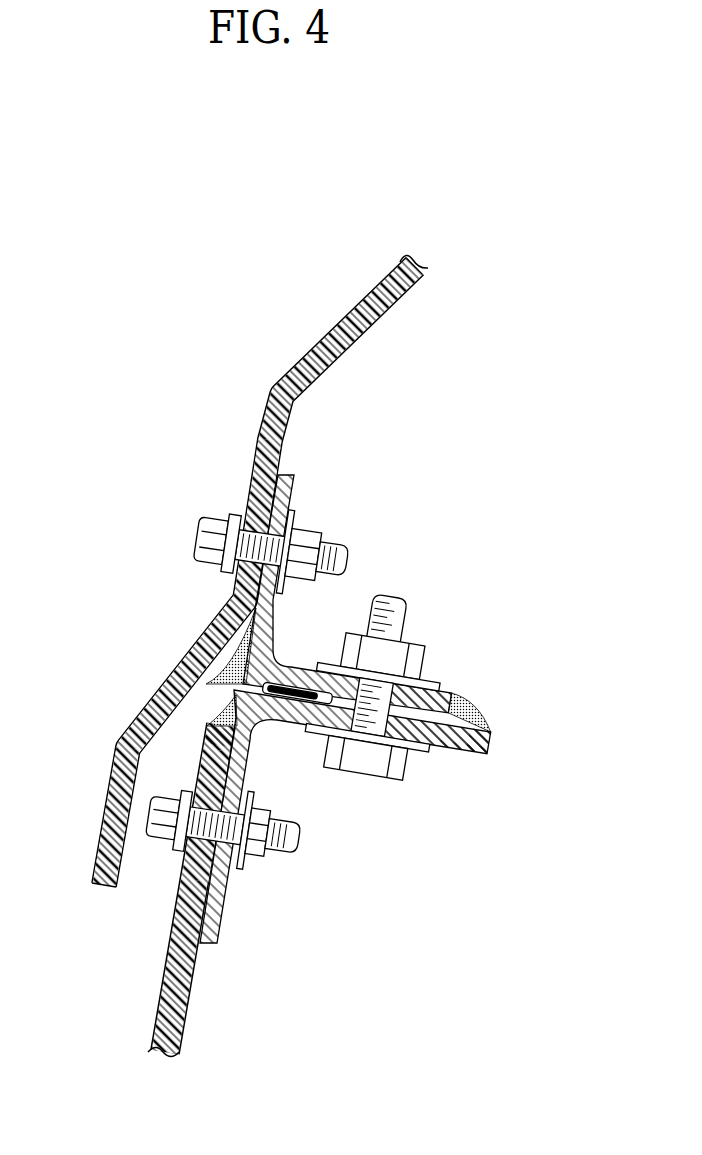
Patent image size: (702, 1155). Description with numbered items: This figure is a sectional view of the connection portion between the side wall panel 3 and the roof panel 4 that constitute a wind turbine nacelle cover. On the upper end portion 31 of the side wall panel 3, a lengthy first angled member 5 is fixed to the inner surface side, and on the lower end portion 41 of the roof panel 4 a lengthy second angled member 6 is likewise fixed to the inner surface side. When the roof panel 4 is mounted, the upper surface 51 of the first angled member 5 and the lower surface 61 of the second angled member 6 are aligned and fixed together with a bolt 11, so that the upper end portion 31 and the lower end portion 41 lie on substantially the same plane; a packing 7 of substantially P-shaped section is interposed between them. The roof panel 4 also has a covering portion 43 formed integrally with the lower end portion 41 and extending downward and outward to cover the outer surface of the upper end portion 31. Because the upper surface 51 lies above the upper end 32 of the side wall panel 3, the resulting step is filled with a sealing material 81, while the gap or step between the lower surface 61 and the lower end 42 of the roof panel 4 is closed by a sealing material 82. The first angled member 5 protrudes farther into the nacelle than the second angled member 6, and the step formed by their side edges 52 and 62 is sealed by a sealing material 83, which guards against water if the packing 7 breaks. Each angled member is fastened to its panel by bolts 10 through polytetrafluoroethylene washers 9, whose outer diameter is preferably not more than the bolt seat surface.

The side wall panel 3 is at (162, 990).
The roof panel 4 is at (272, 390).
The first angled member 5 is at (208, 925).
The second angled member 6 is at (290, 490).
The packing 7 is at (294, 703).
The polytetrafluoroethylene washer 9 is at (228, 567).
The bolt 10 is at (205, 540).
The bolt 11 is at (372, 780).
The upper end portion 31 is at (203, 780).
The upper end 32 is at (215, 718).
The lower end portion 41 is at (257, 470).
The lower end 42 is at (250, 600).
The covering portion 43 is at (105, 806).
The upper surface 51 is at (488, 738).
The side edge 52 is at (487, 757).
The lower surface 61 is at (437, 727).
The side edge 62 is at (452, 697).
The sealing material 81 is at (220, 700).
The sealing material 82 is at (227, 660).
The sealing material 83 is at (472, 720).